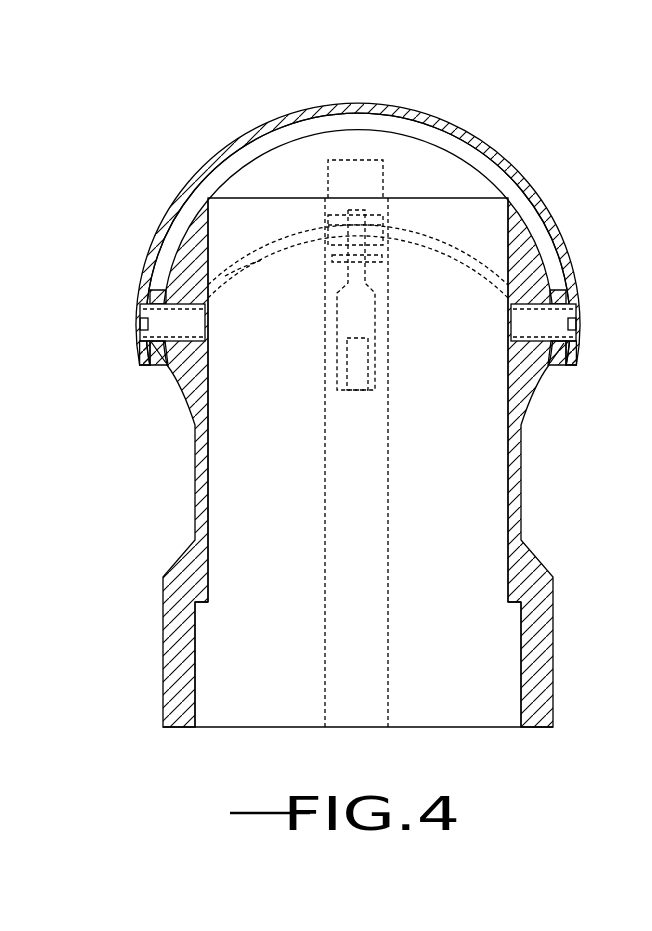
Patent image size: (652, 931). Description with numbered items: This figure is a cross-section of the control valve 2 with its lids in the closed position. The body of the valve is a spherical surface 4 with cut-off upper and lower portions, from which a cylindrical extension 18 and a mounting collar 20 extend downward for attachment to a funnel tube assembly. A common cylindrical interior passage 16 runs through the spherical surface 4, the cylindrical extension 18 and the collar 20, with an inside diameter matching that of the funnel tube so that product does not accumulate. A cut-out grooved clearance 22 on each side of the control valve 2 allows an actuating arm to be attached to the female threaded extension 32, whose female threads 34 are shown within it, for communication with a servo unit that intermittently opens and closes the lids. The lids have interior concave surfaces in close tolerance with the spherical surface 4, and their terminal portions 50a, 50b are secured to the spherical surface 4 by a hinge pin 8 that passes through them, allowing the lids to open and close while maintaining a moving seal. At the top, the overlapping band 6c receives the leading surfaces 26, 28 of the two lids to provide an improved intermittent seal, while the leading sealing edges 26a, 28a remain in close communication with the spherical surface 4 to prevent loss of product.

The control valve 2 is at (168, 137).
The spherical surface 4 is at (177, 398).
The overlapping band 6c is at (343, 101).
The hinge pin 8 is at (146, 312).
The cylindrical interior passage 16 is at (273, 480).
The cylindrical extension 18 is at (525, 512).
The mounting collar 20 is at (553, 623).
The cut-out grooved clearance 22 is at (369, 537).
The leading surface of lid 6a 26 is at (462, 262).
The leading sealing edge 26a is at (260, 261).
The leading surface of lid 6b 28 is at (416, 126).
The leading sealing edge 28a is at (458, 137).
The female threaded extension 32 is at (375, 325).
The female threads 34 is at (354, 372).
The terminal portion 50a is at (160, 367).
The terminal portion 50b is at (140, 359).